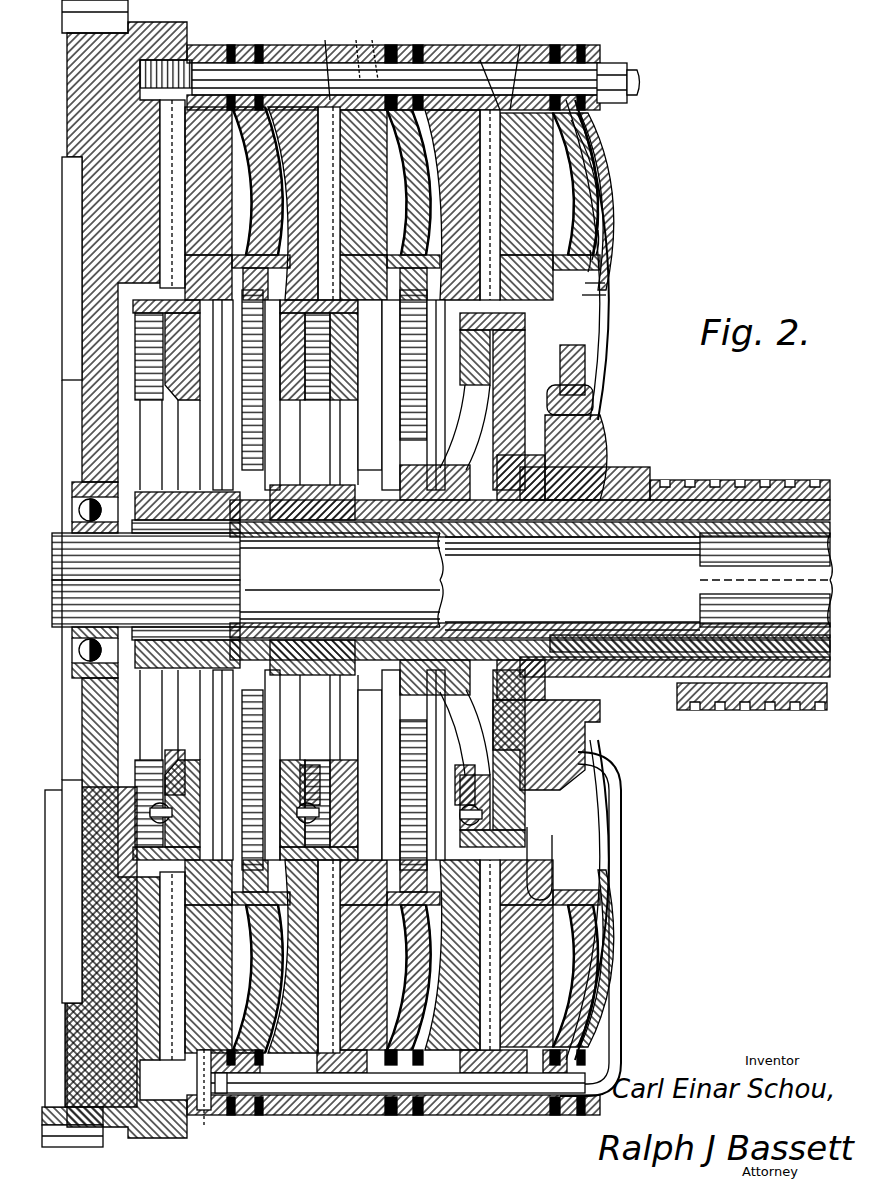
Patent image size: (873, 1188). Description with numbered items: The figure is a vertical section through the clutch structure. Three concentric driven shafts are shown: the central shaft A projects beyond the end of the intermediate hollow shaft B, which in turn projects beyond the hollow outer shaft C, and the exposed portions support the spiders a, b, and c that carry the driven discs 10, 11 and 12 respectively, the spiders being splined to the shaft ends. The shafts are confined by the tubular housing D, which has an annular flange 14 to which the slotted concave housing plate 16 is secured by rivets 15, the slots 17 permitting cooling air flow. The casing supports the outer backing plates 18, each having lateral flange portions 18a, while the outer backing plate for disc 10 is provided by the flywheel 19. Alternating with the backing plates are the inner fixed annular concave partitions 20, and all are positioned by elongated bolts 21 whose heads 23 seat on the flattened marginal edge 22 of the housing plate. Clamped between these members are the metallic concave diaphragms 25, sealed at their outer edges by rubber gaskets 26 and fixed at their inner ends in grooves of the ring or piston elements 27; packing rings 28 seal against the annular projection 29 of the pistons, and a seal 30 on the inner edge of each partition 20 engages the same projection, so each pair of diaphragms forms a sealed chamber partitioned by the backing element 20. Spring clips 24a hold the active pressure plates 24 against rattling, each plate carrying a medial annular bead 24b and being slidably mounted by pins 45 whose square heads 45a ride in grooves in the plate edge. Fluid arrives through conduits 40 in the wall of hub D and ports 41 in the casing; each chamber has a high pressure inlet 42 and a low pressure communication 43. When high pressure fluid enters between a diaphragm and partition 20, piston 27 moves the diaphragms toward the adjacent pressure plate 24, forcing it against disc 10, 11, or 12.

The driven disc 10 is at (183, 50).
The driven disc 11 is at (322, 56).
The driven disc 12 is at (526, 66).
The annular flange 14 is at (595, 455).
The rivets 15 is at (594, 400).
The housing plate 16 is at (595, 360).
The slots 17 is at (616, 193).
The outer backing plate 18 is at (441, 203).
The lateral flange portion 18a is at (482, 60).
The flywheel 19 is at (92, 228).
The inner fixed annular concave partition 20 is at (578, 160).
The elongated bolt 21 is at (482, 68).
The marginal edge 22 is at (603, 63).
The head 23 is at (633, 70).
The active clutch pressure plate 24 is at (392, 203).
The spring clip 24a is at (636, 800).
The annular bead 24b is at (566, 185).
The metallic concave diaphragm 25 is at (600, 198).
The rubber gasket 26 is at (232, 45).
The ring or piston element 27 is at (603, 300).
The seal or packing ring 28 is at (600, 290).
The annular projection 29 is at (590, 262).
The seal 30 is at (594, 240).
The conduit 40 is at (610, 845).
The port 41 is at (392, 1083).
The high pressure inlet 42 is at (206, 1112).
The low pressure communication 43 is at (224, 1075).
The pin 45 is at (387, 44).
The square head 45a is at (356, 47).
The spider a is at (178, 470).
The spider b is at (312, 460).
The spider c is at (462, 430).
The central shaft A is at (247, 561).
The intermediate hollow shaft B is at (470, 548).
The hollow outer shaft C is at (748, 545).
The tubular housing D is at (650, 470).